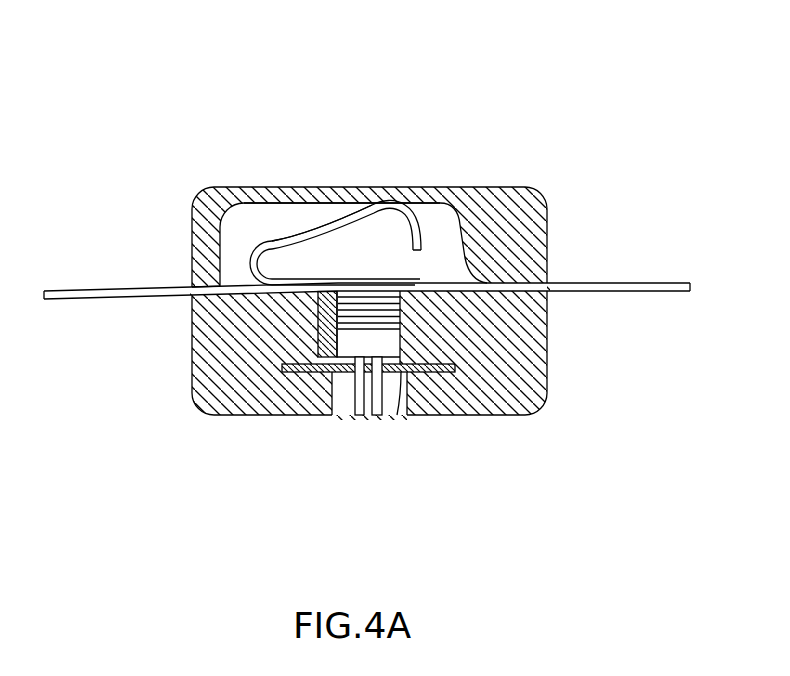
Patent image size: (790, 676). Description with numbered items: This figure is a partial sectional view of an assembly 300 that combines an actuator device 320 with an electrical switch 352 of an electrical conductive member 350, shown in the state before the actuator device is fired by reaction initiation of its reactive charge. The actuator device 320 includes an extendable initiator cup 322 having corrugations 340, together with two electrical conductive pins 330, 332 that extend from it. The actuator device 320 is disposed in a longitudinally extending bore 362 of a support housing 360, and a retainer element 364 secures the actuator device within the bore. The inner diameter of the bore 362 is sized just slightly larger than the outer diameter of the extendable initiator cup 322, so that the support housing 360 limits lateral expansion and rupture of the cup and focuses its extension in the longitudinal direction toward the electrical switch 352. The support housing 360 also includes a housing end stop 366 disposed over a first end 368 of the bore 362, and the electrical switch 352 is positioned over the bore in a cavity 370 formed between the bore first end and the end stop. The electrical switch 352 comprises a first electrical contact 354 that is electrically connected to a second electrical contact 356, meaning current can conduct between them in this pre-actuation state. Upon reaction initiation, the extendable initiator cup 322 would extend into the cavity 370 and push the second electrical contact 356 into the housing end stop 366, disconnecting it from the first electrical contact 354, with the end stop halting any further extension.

The assembly 300 is at (553, 130).
The actuator device 320 is at (403, 347).
The extendable initiator cup 322 is at (337, 343).
The electrical conductive pin 330 is at (355, 415).
The electrical conductive pin 332 is at (376, 415).
The corrugations 340 is at (403, 312).
The electrical conductive member 350 is at (82, 290).
The electrical switch 352 is at (265, 238).
The first electrical contact 354 is at (240, 288).
The second electrical contact 356 is at (368, 282).
The support housing 360 is at (547, 380).
The longitudinally extending bore 362 is at (337, 307).
The retainer element 364 is at (397, 415).
The housing end stop 366 is at (301, 213).
The first end of the bore 368 is at (403, 292).
The cavity 370 is at (272, 202).